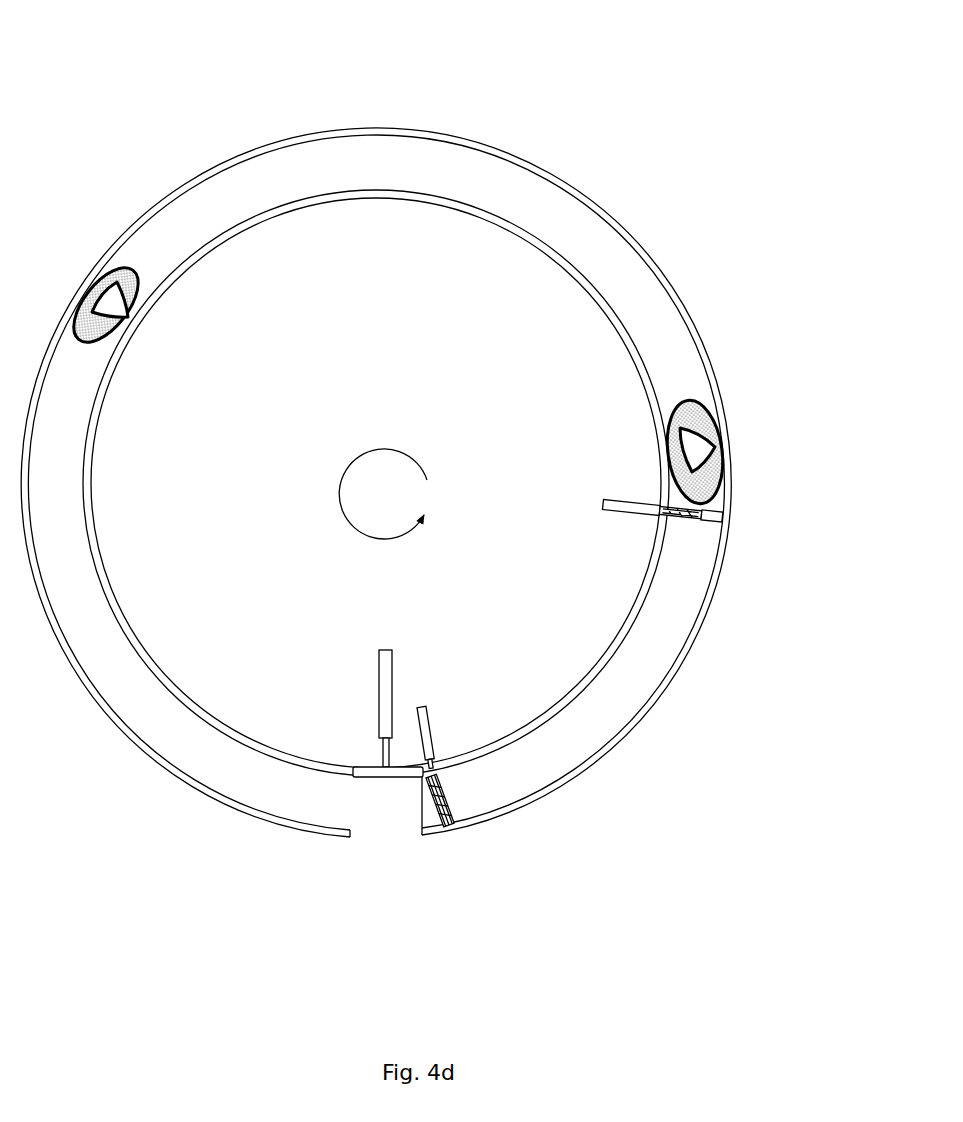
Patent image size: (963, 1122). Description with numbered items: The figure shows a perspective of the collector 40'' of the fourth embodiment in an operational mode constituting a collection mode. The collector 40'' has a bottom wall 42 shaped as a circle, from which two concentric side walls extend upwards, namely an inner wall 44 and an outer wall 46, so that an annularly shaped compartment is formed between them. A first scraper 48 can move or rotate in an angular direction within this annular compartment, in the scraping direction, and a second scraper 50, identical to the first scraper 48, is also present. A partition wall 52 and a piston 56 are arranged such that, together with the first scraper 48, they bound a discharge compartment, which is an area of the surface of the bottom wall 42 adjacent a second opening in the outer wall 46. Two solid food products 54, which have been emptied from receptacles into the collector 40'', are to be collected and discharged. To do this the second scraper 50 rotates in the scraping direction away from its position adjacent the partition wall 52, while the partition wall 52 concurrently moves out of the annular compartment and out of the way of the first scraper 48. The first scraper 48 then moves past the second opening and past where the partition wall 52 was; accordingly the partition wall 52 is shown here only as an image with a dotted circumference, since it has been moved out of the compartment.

The collector 40'' is at (418, 486).
The bottom wall 42 is at (660, 645).
The inner wall 44 is at (157, 678).
The outer wall 46 is at (173, 770).
The first scraper 48 is at (440, 796).
The second scraper 50 is at (685, 518).
The partition wall 52 is at (420, 808).
The solid food product 54 is at (113, 310).
The piston 56 is at (368, 773).